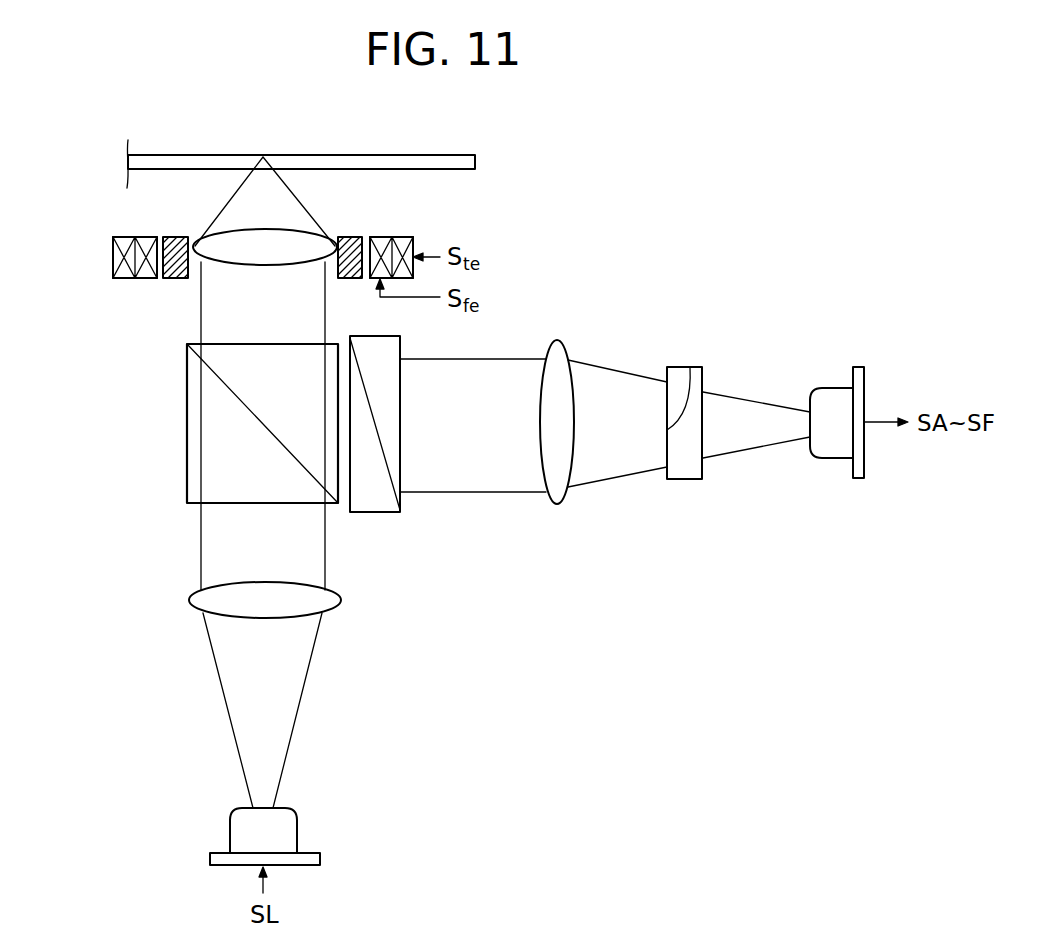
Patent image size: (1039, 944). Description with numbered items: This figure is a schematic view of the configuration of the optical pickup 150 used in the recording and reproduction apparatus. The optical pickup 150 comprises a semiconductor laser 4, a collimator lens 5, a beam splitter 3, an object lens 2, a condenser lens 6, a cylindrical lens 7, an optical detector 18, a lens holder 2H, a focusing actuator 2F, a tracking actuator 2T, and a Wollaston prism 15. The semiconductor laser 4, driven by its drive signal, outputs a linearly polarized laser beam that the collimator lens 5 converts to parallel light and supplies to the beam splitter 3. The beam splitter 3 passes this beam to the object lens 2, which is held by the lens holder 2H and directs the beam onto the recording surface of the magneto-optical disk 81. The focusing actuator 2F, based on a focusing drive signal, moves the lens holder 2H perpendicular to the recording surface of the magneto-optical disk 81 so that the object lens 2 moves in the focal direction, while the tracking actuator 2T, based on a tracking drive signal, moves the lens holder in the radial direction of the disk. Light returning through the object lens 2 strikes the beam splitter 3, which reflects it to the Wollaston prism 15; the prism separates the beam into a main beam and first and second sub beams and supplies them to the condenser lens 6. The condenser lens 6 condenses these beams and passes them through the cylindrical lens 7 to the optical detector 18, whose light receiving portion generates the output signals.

The optical pickup 150 is at (606, 248).
The magneto-optical disk 81 is at (411, 155).
The object lens 2 is at (197, 262).
The tracking actuator 2T is at (122, 238).
The focusing actuator 2F is at (142, 237).
The lens holder 2H is at (181, 237).
The beam splitter 3 is at (187, 372).
The Wollaston prism 15 is at (380, 512).
The condenser lens 6 is at (557, 505).
The cylindrical lens 7 is at (684, 479).
The optical detector 18 is at (858, 478).
The collimator lens 5 is at (190, 600).
The semiconductor laser 4 is at (210, 862).